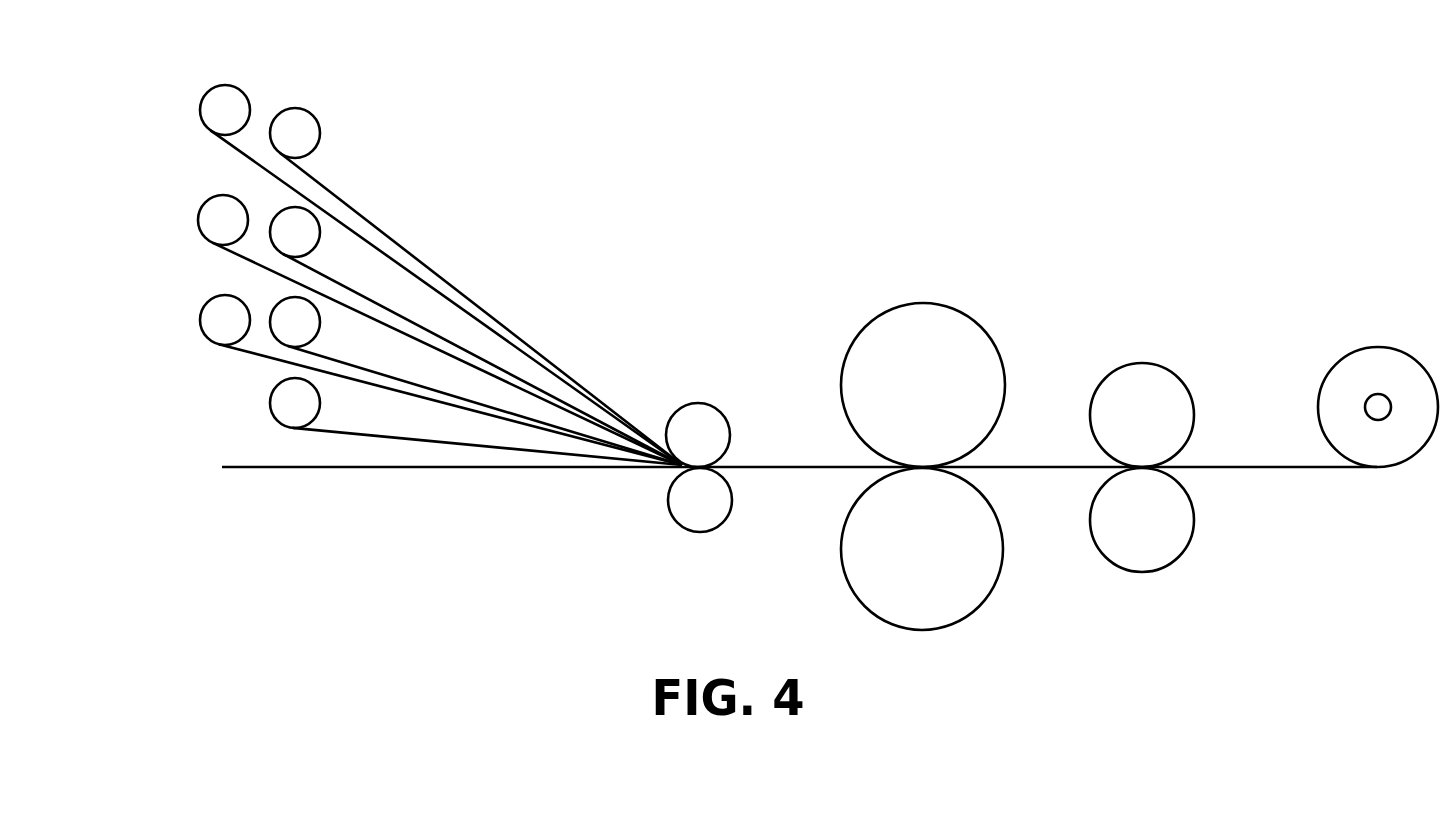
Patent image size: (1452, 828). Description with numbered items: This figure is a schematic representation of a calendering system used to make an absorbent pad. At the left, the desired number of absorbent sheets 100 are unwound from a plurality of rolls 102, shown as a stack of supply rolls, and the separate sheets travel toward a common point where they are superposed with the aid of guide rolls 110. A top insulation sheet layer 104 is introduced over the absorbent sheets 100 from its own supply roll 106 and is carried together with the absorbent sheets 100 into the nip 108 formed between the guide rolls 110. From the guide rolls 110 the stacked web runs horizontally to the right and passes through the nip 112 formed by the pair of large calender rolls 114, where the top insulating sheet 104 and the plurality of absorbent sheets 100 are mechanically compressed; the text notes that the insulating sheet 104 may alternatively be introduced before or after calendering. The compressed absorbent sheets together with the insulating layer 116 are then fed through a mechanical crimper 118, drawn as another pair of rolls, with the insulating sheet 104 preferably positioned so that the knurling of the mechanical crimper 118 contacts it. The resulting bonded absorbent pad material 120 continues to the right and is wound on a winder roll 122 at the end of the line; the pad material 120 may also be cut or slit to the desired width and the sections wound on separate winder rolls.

The absorbent sheets 100 is at (240, 153).
The rolls 102 is at (237, 84).
The top insulation sheet layer 104 is at (368, 218).
The supply roll 106 is at (318, 123).
The nip 108 is at (660, 430).
The guide rolls 110 is at (700, 417).
The nip 112 is at (858, 453).
The calender rolls 114 is at (933, 317).
The insulating layer 116 is at (1033, 467).
The mechanical crimper 118 is at (1147, 372).
The bonded absorbent pad material 120 is at (1247, 467).
The winder roll 122 is at (1375, 360).